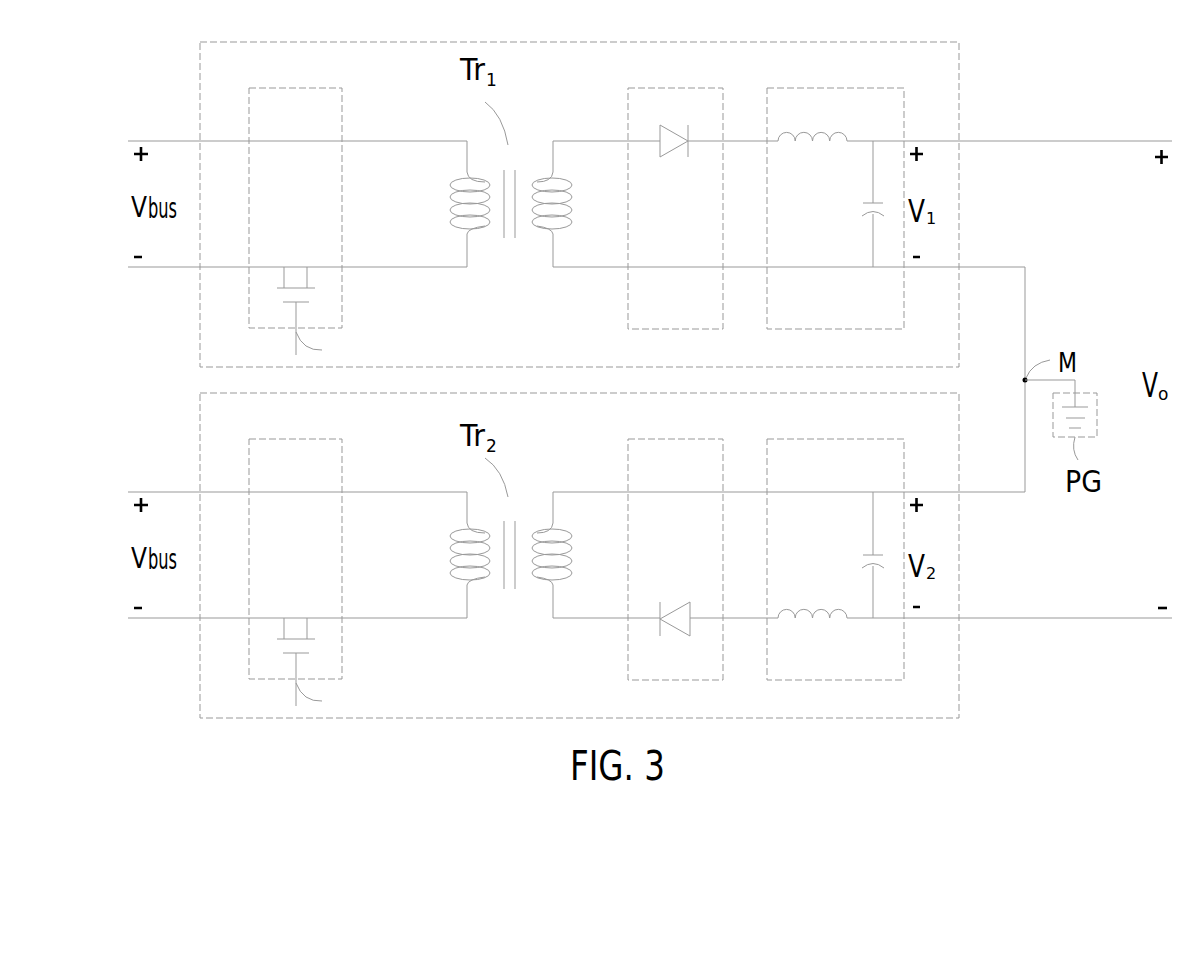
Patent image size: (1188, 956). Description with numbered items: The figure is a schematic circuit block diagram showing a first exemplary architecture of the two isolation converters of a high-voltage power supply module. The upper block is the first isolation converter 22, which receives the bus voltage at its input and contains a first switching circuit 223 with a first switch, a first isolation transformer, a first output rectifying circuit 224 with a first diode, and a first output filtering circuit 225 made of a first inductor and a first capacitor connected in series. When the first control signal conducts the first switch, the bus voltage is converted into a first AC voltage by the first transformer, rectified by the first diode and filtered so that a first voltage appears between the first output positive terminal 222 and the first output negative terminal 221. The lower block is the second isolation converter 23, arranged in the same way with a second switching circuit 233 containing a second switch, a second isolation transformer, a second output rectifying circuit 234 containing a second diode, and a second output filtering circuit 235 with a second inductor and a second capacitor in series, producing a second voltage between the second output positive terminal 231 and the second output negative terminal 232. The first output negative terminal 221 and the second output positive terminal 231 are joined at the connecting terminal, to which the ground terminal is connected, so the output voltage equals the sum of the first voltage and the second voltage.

The first isolation converter 22 is at (958, 70).
The first output negative terminal 221 is at (958, 267).
The first output positive terminal 222 is at (958, 141).
The first switching circuit 223 is at (270, 87).
The first output rectifying circuit 224 is at (650, 87).
The first output filtering circuit 225 is at (820, 87).
The second isolation converter 23 is at (958, 420).
The second output positive terminal 231 is at (958, 492).
The second output negative terminal 232 is at (958, 617).
The second switching circuit 233 is at (270, 438).
The second output rectifying circuit 234 is at (650, 438).
The second output filtering circuit 235 is at (820, 438).